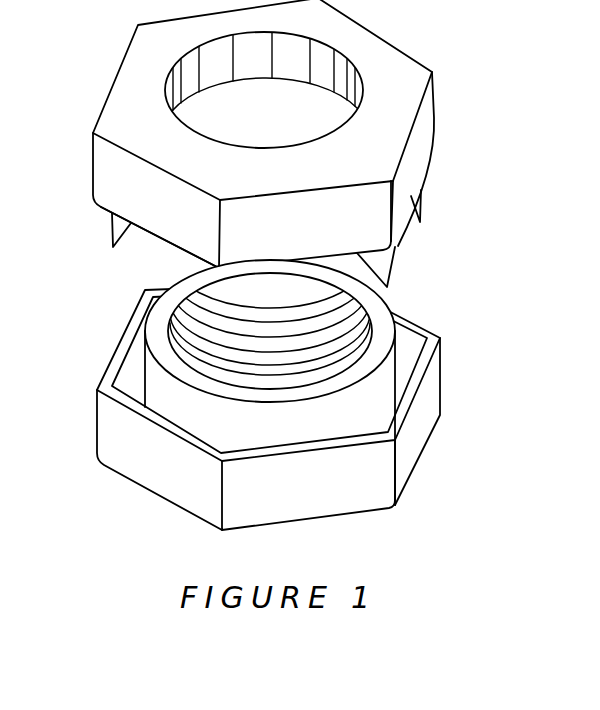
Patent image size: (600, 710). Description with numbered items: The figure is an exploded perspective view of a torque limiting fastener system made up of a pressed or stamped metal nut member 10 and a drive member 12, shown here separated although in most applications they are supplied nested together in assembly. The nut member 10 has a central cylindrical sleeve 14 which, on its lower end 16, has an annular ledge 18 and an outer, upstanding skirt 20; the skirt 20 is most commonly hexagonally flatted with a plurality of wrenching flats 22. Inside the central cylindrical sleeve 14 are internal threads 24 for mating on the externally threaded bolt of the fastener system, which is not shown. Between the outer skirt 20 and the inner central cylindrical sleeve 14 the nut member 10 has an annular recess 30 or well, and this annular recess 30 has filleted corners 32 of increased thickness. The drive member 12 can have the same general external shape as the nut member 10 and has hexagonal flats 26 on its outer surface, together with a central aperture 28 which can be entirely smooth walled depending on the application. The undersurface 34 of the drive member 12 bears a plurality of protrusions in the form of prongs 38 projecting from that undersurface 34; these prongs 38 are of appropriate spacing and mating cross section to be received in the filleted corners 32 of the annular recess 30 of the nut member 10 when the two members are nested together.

The nut member 10 is at (280, 409).
The drive member 12 is at (277, 155).
The central cylindrical sleeve 14 is at (387, 329).
The lower end 16 is at (396, 504).
The annular ledge 18 is at (414, 372).
The outer upstanding skirt 20 is at (343, 507).
The wrenching flats 22 is at (172, 486).
The internal threads 24 is at (356, 320).
The hexagonal flats 26 is at (422, 152).
The central aperture 28 is at (343, 70).
The annular recess 30 is at (146, 328).
The filleted corners 32 is at (121, 384).
The undersurface 34 is at (171, 247).
The prongs 38 is at (415, 209).